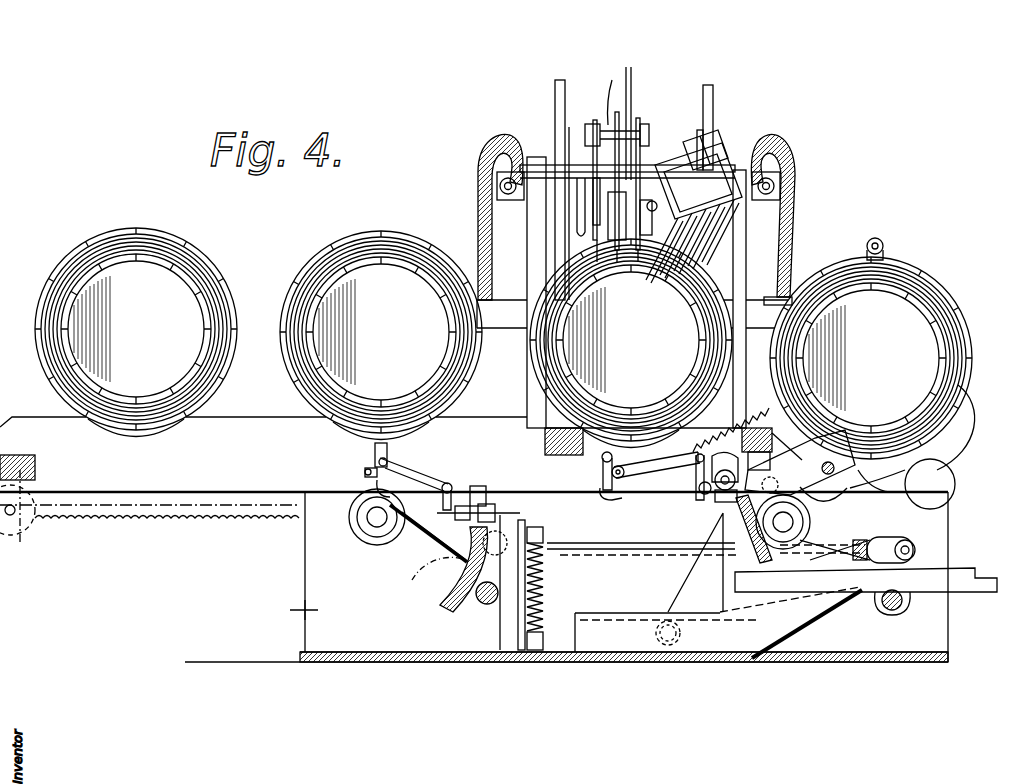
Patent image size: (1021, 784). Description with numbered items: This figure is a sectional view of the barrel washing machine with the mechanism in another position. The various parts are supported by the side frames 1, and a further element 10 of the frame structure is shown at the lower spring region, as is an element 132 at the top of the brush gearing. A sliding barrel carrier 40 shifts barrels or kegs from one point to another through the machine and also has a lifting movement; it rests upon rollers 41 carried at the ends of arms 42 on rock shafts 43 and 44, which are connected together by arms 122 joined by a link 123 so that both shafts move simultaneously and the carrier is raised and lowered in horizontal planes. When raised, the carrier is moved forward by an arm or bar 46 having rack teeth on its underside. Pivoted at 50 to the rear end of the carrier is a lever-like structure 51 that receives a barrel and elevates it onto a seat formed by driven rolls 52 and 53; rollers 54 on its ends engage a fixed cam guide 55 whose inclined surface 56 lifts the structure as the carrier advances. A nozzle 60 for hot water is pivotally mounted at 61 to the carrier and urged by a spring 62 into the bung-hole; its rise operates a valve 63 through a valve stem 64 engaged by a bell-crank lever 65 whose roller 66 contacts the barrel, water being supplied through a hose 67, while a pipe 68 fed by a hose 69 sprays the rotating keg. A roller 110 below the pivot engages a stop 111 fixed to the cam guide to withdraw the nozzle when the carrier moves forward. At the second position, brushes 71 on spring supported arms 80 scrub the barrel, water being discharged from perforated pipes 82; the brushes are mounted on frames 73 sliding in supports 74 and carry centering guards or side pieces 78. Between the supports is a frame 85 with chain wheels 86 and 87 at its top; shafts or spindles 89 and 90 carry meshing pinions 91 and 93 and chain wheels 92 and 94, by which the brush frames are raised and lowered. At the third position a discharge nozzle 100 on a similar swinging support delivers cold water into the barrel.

The side frame 1 is at (474, 577).
The spring 10 is at (548, 572).
The barrel carrier 40 is at (371, 439).
The roller 41 is at (365, 530).
The arm 42 is at (397, 548).
The rock shaft 43 is at (472, 610).
The rock shaft 44 is at (904, 612).
The arm or bar 46 is at (80, 522).
The pivot 50 is at (800, 462).
The lever-like structure 51 is at (966, 428).
The roll 52 is at (956, 492).
The roll 53 is at (848, 497).
The roller 54 is at (656, 634).
The cam guide 55 is at (742, 622).
The inclined surface 56 is at (807, 624).
The nozzle 60 is at (564, 455).
The pivot 61 is at (762, 428).
The spring 62 is at (706, 445).
The valve 63 is at (715, 500).
The valve stem 64 is at (684, 480).
The bell-crank lever 65 is at (696, 448).
The roller 66 is at (640, 465).
The hose 67 is at (763, 566).
The pipe 68 is at (884, 243).
The hose 69 is at (797, 213).
The brush 71 is at (705, 226).
The frame 73 is at (555, 94).
The support 74 is at (747, 242).
The guard or side piece 78 is at (490, 328).
The spring supported arm 80 is at (722, 143).
The perforated pipe 82 is at (664, 172).
The frame 85 is at (596, 120).
The chain wheel 86 is at (604, 94).
The chain wheel 87 is at (638, 118).
The shaft or spindle 89 is at (648, 125).
The shaft or spindle 90 is at (632, 262).
The pinion 91 is at (578, 196).
The chain wheel 92 is at (585, 172).
The pinion 93 is at (592, 230).
The chain wheel 94 is at (603, 262).
The discharge nozzle 100 is at (388, 456).
The roller 110 is at (802, 580).
The stop 111 is at (684, 562).
The arm 122 is at (440, 572).
The link 123 is at (658, 550).
The rod 132 is at (645, 52).